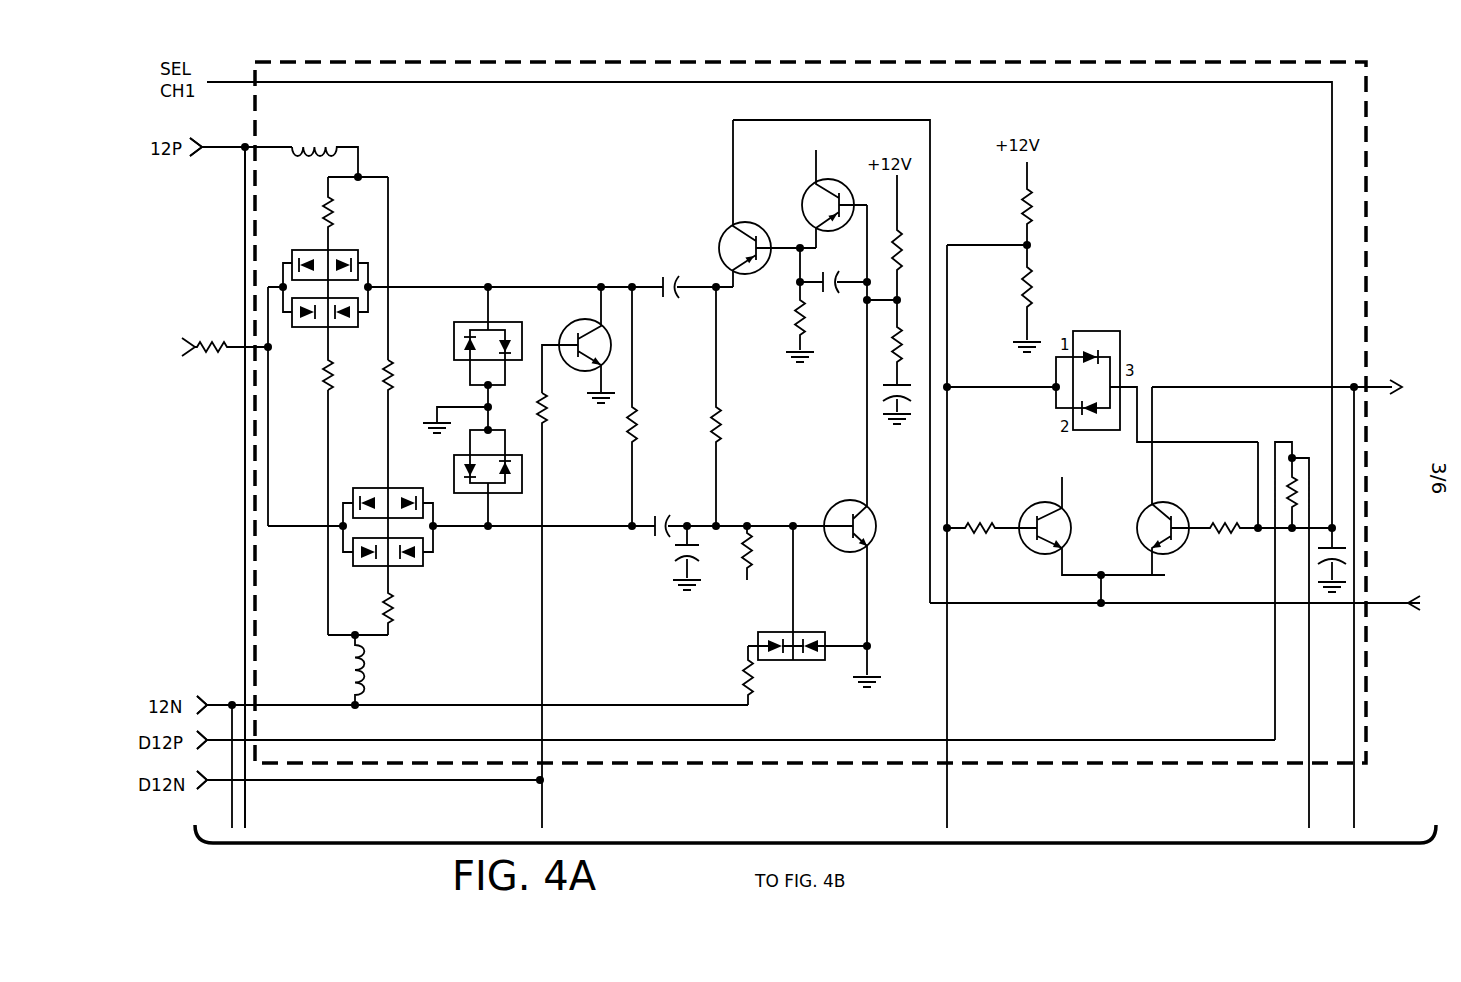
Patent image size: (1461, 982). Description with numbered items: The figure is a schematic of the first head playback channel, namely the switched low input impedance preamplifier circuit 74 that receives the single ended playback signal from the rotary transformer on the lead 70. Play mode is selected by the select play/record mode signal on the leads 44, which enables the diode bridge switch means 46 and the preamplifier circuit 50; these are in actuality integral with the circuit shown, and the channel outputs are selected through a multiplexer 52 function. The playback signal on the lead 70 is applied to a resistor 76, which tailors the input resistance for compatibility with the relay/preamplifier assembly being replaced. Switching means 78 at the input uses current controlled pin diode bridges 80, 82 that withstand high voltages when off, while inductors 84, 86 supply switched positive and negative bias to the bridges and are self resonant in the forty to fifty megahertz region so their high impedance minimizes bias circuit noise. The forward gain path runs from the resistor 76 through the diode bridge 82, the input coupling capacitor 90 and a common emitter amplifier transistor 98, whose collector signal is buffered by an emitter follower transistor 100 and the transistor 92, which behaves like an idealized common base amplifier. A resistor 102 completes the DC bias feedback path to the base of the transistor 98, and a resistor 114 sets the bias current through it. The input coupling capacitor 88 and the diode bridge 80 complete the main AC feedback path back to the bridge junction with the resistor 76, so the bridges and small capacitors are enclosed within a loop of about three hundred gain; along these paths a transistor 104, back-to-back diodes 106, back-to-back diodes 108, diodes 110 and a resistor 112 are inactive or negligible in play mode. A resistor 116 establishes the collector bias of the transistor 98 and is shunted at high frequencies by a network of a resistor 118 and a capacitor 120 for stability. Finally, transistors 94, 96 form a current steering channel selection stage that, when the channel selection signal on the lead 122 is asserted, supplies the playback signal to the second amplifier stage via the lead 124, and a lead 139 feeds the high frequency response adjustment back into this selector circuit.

The leads 44 is at (218, 152).
The diode bridge switch means 46 is at (401, 148).
The preamplifier circuit 50 is at (602, 204).
The multiplexer 52 is at (1138, 702).
The lead 70 is at (198, 340).
The preamplifier circuit 74 is at (246, 542).
The resistor 76 is at (217, 352).
The switching means 78 is at (374, 345).
The diode bridge 80 is at (350, 250).
The diode bridge 82 is at (340, 538).
The inductor 84 is at (315, 166).
The inductor 86 is at (352, 668).
The input coupling capacitor 88 is at (660, 283).
The input coupling capacitor 90 is at (652, 533).
The transistor 92 is at (730, 230).
The transistor 94 is at (1040, 500).
The transistor 96 is at (1153, 500).
The common emitter amplifier transistor 98 is at (848, 500).
The emitter follower transistor 100 is at (812, 187).
The resistor 102 is at (720, 418).
The transistor 104 is at (612, 345).
The back-to-back diodes 106 is at (495, 325).
The back-to-back diodes 108 is at (515, 495).
The diodes 110 is at (778, 662).
The resistor 112 is at (636, 418).
The resistor 114 is at (752, 540).
The resistor 116 is at (903, 242).
The resistor 118 is at (903, 342).
The capacitor 120 is at (905, 385).
The lead 122 is at (223, 82).
The lead 124 is at (1376, 380).
The lead 139 is at (1375, 600).